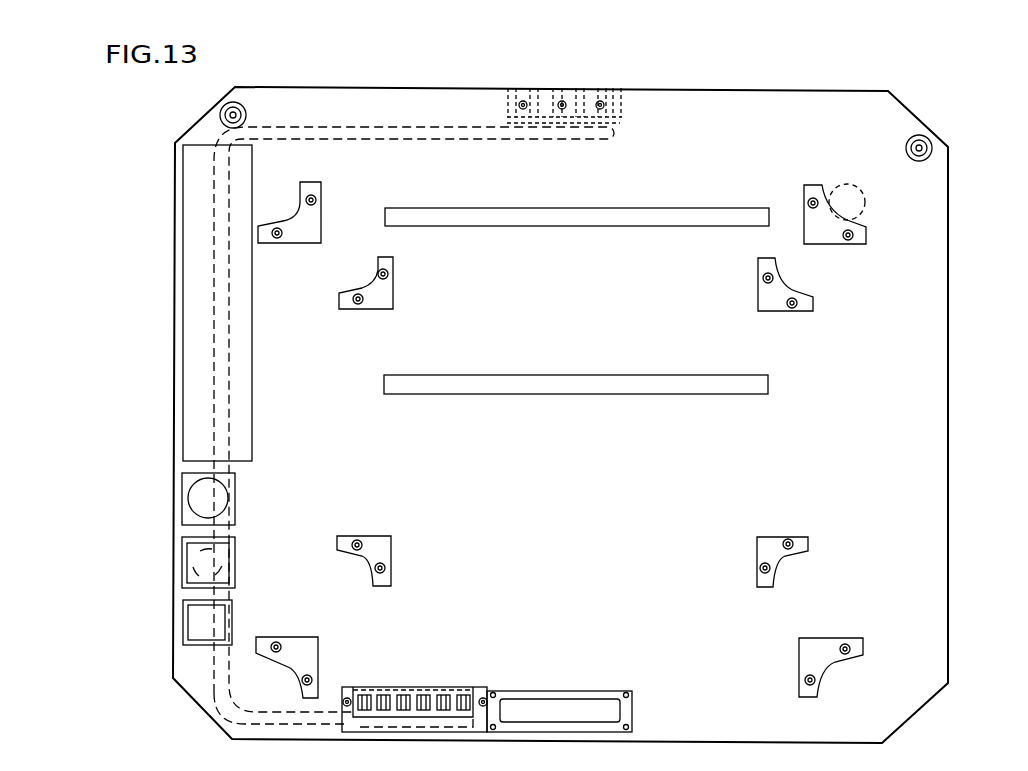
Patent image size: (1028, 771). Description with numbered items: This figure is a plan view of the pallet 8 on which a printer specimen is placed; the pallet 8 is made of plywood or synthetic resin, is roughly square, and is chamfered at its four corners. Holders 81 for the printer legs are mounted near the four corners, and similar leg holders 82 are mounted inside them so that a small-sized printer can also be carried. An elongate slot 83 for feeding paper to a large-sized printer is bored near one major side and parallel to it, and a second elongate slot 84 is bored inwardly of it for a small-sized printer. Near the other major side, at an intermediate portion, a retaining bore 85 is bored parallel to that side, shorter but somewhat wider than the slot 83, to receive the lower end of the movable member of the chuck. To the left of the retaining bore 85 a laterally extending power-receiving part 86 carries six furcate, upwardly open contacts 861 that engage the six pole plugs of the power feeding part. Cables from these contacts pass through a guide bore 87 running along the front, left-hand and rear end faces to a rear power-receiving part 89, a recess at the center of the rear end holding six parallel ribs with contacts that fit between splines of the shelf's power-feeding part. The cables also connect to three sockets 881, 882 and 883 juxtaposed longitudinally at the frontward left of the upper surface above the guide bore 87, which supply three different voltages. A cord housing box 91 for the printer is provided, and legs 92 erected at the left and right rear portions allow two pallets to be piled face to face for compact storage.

The pallet 8 is at (958, 351).
The holder 81 is at (321, 202).
The leg holder 82 is at (393, 284).
The elongate slot 83 is at (706, 208).
The elongate slot 84 is at (768, 385).
The retaining bore 85 is at (613, 710).
The power-receiving part 86 is at (438, 685).
The contact 861 is at (404, 695).
The guide bore 87 is at (220, 707).
The socket 881 is at (235, 492).
The socket 882 is at (235, 555).
The socket 883 is at (232, 620).
The rear power-receiving part 89 is at (624, 117).
The cord housing box 91 is at (242, 444).
The leg 92 is at (246, 114).